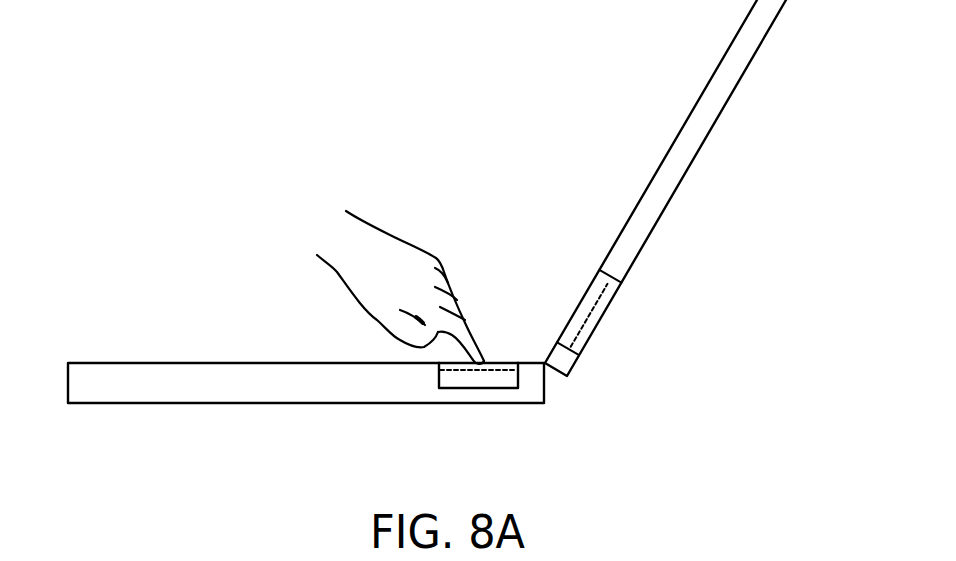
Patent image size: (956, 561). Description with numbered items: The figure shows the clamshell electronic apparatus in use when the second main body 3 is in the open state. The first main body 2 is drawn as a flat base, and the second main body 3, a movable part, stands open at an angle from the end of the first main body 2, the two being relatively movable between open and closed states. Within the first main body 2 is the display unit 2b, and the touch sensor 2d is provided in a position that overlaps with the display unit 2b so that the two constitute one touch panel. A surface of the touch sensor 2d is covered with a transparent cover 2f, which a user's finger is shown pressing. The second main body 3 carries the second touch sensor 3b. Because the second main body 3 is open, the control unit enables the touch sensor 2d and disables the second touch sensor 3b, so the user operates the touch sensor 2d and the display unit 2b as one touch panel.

The first main body 2 is at (198, 404).
The display unit 2b is at (463, 382).
The touch sensor 2d is at (504, 371).
The transparent cover 2f is at (504, 371).
The second main body 3 is at (709, 134).
The second touch sensor 3b is at (603, 305).